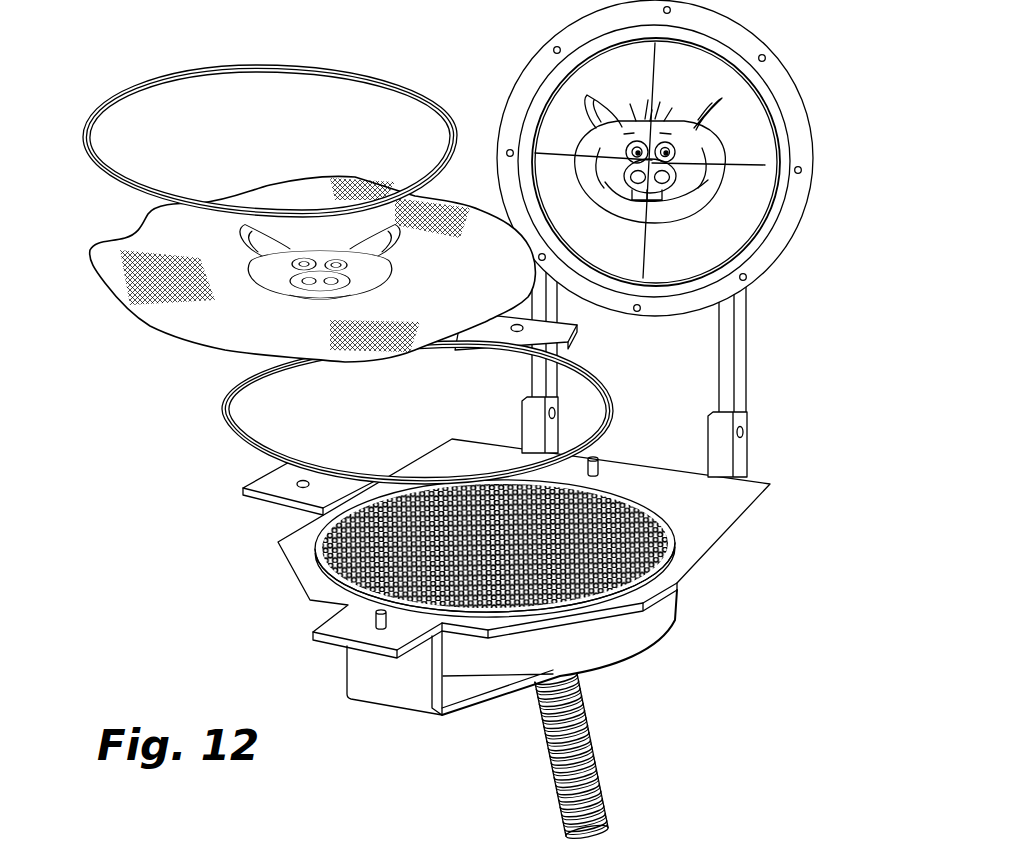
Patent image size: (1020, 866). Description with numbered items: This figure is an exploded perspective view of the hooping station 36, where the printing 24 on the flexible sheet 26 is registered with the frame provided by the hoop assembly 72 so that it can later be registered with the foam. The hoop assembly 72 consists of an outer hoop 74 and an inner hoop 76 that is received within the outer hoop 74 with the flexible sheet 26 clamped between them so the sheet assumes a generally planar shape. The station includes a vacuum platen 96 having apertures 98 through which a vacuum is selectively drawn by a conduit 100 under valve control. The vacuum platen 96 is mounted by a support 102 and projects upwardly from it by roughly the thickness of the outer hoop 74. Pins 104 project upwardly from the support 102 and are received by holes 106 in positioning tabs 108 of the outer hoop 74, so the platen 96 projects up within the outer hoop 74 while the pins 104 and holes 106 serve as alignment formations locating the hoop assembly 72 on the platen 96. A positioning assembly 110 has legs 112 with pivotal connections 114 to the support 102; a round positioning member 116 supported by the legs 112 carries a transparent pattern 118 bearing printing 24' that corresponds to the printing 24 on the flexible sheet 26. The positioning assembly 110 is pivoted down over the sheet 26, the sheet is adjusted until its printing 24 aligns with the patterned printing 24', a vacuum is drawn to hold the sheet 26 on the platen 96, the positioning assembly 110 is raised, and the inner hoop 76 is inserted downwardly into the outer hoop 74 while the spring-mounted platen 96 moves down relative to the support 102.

The inner hoop 76 is at (170, 78).
The transparent pattern 118 is at (680, 62).
The round positioning member 116 is at (782, 92).
The printing 24' is at (722, 159).
The positioning assembly 110 is at (685, 158).
The legs 112 is at (530, 368).
The pivotal connections 114 is at (517, 407).
The holes 106 is at (412, 446).
The positioning tabs 108 is at (290, 508).
The pins 104 is at (373, 618).
The printing 24 is at (234, 304).
The flexible sheet 26 is at (302, 292).
The outer hoop 74 is at (219, 416).
The hoop assembly 72 is at (389, 446).
The support 102 is at (297, 555).
The vacuum platen 96 is at (573, 568).
The hooping station 36 is at (523, 633).
The apertures 98 is at (620, 560).
The conduit 100 is at (593, 777).